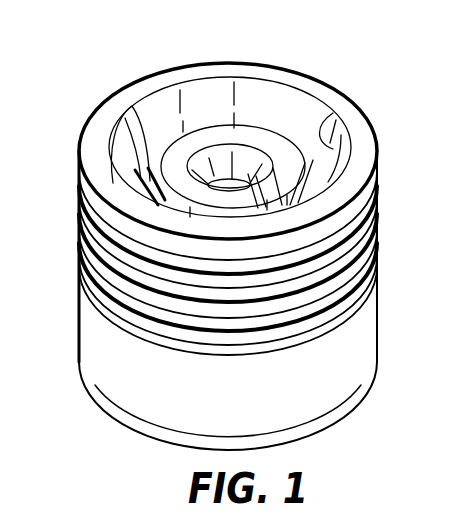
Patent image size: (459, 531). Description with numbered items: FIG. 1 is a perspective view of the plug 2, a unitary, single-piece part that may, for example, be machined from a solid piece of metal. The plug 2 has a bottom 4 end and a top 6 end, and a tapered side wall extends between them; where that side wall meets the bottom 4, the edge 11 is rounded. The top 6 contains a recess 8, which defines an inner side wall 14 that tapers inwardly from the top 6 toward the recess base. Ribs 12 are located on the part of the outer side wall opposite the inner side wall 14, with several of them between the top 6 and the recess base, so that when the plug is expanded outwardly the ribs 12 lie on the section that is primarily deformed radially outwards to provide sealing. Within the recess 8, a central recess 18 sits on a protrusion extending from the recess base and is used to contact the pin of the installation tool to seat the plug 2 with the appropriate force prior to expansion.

The plug 2 is at (45, 335).
The bottom end 4 is at (166, 477).
The top end 6 is at (145, 52).
The recess 8 is at (146, 168).
The edge 11 is at (124, 431).
The ribs 12 is at (383, 188).
The inner side wall 14 is at (330, 116).
The central recess 18 is at (256, 166).